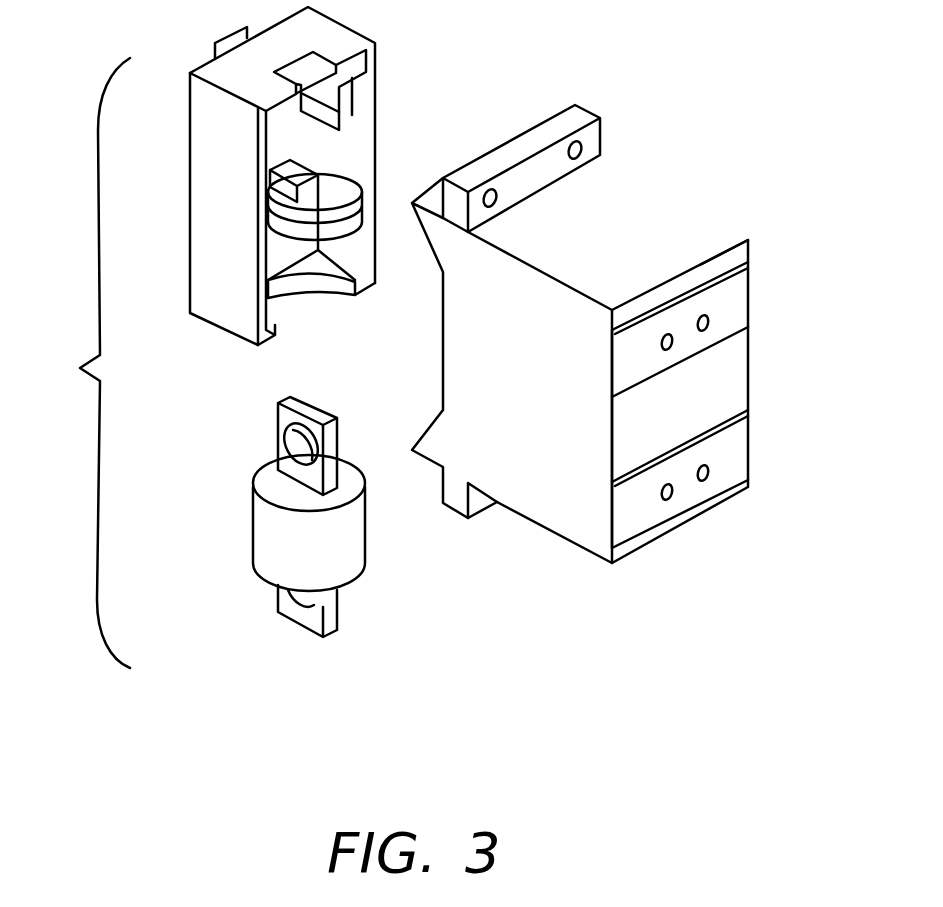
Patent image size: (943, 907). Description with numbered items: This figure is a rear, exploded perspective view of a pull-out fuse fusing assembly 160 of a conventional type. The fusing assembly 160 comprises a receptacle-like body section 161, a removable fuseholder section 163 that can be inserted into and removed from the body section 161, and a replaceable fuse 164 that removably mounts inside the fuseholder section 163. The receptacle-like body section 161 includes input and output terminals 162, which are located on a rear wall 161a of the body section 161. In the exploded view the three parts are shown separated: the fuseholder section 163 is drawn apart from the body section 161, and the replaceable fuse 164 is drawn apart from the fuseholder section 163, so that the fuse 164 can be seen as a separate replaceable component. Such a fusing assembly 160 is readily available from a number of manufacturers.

The fusing assembly 160 is at (75, 363).
The receptacle-like body section 161 is at (630, 222).
The rear wall 161a is at (717, 400).
The input and output terminals 162 is at (725, 305).
The fuseholder section 163 is at (307, 32).
The replaceable fuse 164 is at (303, 550).